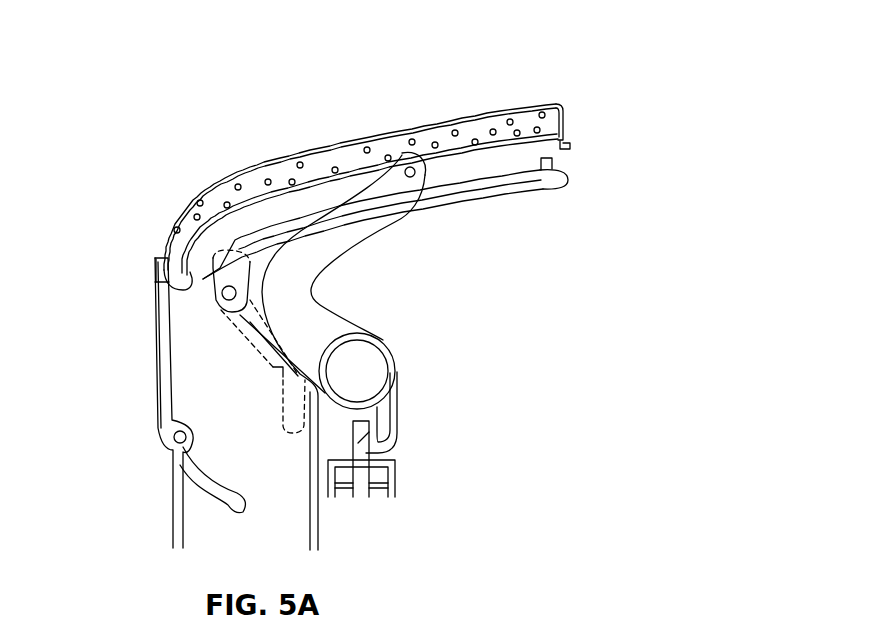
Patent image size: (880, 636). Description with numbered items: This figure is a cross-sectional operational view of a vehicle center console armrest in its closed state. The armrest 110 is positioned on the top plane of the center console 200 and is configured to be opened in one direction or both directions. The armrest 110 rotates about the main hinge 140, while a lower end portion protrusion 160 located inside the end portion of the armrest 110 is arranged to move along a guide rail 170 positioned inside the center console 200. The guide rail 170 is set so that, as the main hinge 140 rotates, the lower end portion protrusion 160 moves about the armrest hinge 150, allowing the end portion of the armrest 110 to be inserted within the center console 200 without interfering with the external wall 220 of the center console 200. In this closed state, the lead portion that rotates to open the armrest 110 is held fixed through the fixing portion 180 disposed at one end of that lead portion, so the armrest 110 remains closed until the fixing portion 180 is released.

The armrest 110 is at (520, 103).
The main hinge 140 is at (376, 366).
The armrest hinge 150 is at (402, 155).
The lower end portion protrusion 160 is at (228, 296).
The guide rail 170 is at (244, 337).
The fixing portion 180 is at (398, 478).
The center console 200 is at (173, 487).
The external wall 220 is at (157, 272).